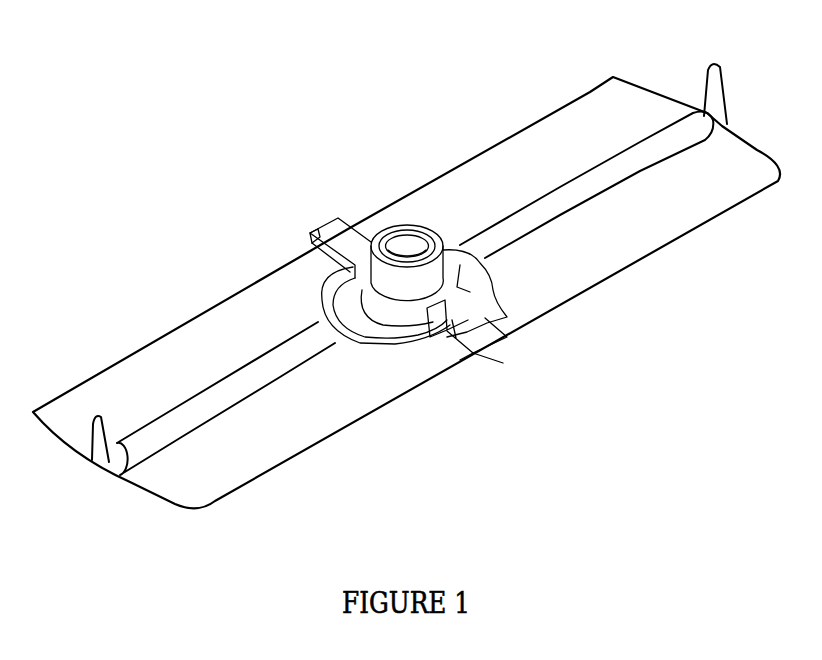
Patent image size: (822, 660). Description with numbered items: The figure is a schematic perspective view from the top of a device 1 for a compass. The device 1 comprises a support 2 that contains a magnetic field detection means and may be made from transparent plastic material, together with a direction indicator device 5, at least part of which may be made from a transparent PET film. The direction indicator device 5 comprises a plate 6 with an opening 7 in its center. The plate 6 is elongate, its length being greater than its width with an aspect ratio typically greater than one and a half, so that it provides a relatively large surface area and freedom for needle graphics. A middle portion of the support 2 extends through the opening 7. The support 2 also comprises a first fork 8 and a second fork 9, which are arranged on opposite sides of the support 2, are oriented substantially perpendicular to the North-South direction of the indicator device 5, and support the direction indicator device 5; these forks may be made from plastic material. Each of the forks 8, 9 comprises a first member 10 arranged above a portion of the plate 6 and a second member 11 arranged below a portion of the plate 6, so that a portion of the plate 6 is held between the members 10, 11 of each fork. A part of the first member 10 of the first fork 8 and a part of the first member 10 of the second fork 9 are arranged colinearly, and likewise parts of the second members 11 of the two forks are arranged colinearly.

The device 1 is at (416, 151).
The support 2 is at (384, 219).
The direction indicator device 5 is at (277, 362).
The plate 6 is at (570, 128).
The opening 7 is at (500, 293).
The first fork 8 is at (500, 362).
The second fork 9 is at (333, 230).
The first member 10 is at (309, 234).
The second member 11 is at (483, 368).